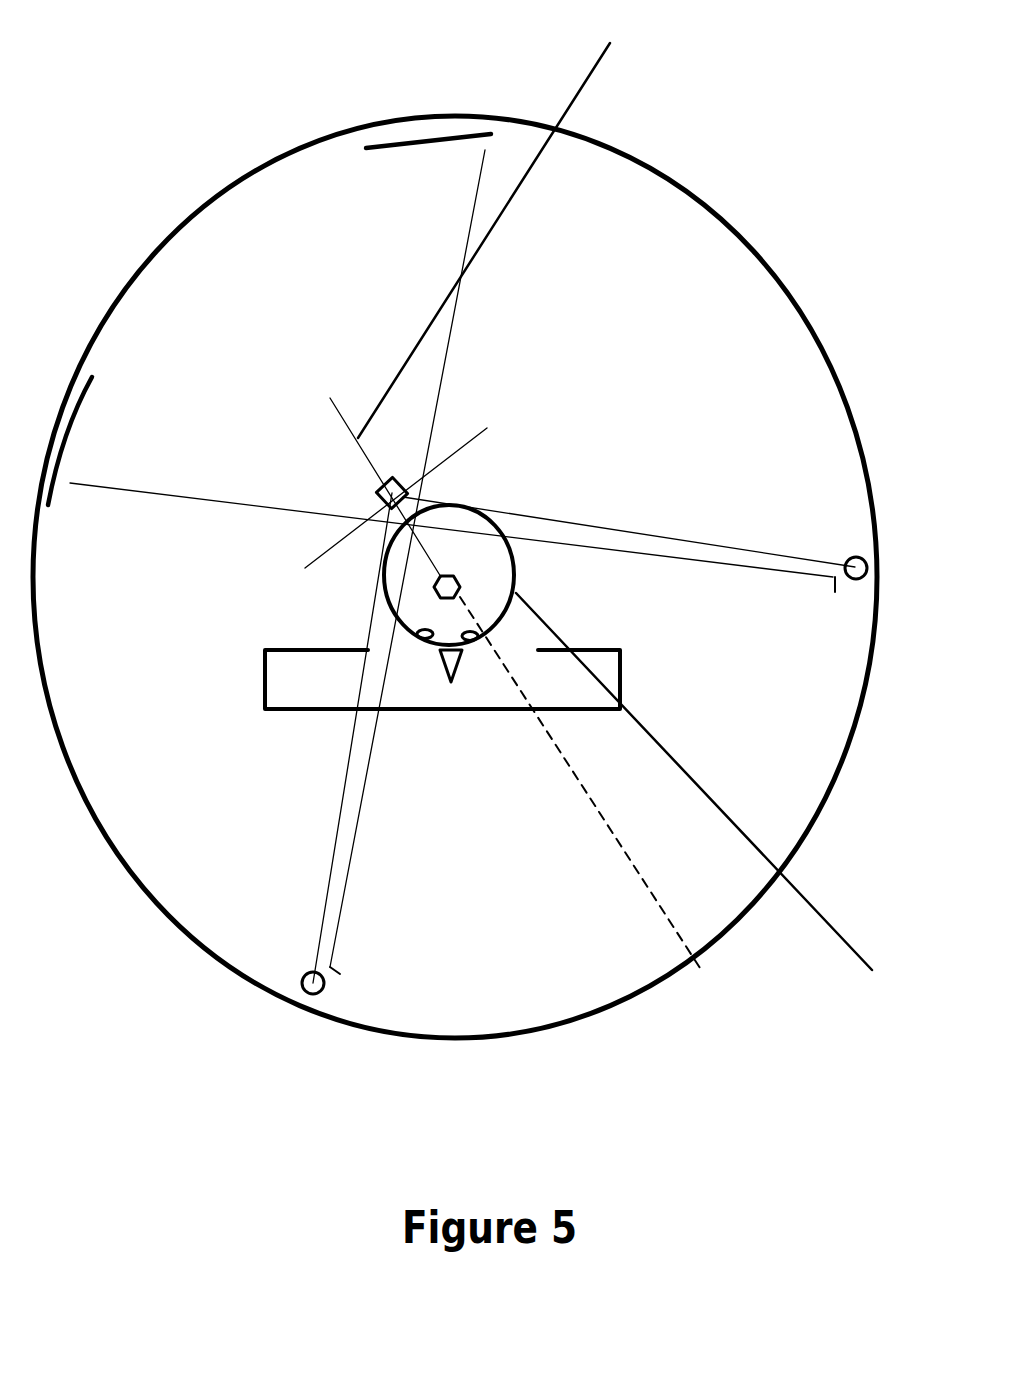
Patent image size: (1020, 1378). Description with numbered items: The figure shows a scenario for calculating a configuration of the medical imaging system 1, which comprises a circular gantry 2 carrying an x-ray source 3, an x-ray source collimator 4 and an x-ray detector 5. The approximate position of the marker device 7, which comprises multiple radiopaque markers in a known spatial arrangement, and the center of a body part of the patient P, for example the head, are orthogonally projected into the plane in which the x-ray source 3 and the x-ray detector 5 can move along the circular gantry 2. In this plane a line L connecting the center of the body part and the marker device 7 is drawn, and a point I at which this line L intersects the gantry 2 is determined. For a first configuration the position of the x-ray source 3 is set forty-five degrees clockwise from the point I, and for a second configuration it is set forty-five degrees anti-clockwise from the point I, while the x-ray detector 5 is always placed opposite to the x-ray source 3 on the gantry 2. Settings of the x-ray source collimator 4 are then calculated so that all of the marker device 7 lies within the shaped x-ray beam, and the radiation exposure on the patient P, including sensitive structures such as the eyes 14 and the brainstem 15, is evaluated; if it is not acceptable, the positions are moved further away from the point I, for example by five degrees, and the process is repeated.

The medical imaging system 1 is at (227, 98).
The gantry 2 is at (403, 115).
The x-ray source 3 is at (313, 983).
The x-ray source collimator 4 is at (337, 973).
The x-ray detector 5 is at (428, 135).
The marker device 7 is at (380, 487).
The eyes 14 is at (430, 648).
The brainstem 15 is at (452, 575).
The line L is at (486, 226).
The patient P is at (705, 791).
The point I is at (693, 957).